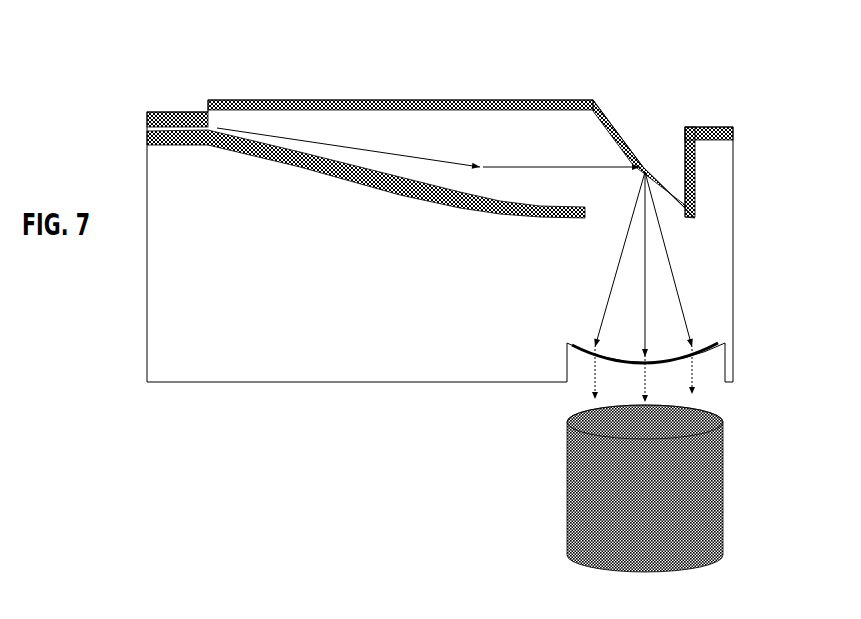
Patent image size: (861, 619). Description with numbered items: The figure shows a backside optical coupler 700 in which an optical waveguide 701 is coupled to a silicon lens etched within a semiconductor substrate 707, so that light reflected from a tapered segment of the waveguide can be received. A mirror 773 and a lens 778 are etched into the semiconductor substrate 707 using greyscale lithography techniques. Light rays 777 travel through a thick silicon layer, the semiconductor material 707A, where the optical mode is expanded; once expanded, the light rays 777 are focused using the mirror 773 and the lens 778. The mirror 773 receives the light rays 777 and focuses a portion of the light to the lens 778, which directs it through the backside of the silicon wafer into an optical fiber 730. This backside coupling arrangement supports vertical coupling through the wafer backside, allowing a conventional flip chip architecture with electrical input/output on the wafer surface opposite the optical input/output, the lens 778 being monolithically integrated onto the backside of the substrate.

The backside optical coupler 700 is at (714, 74).
The optical waveguide 701 is at (585, 90).
The semiconductor substrate 707 is at (157, 348).
The semiconductor material 707A is at (353, 160).
The mirror 773 is at (622, 138).
The light rays 777 is at (372, 150).
The lens 778 is at (705, 342).
The optical fiber 730 is at (565, 488).